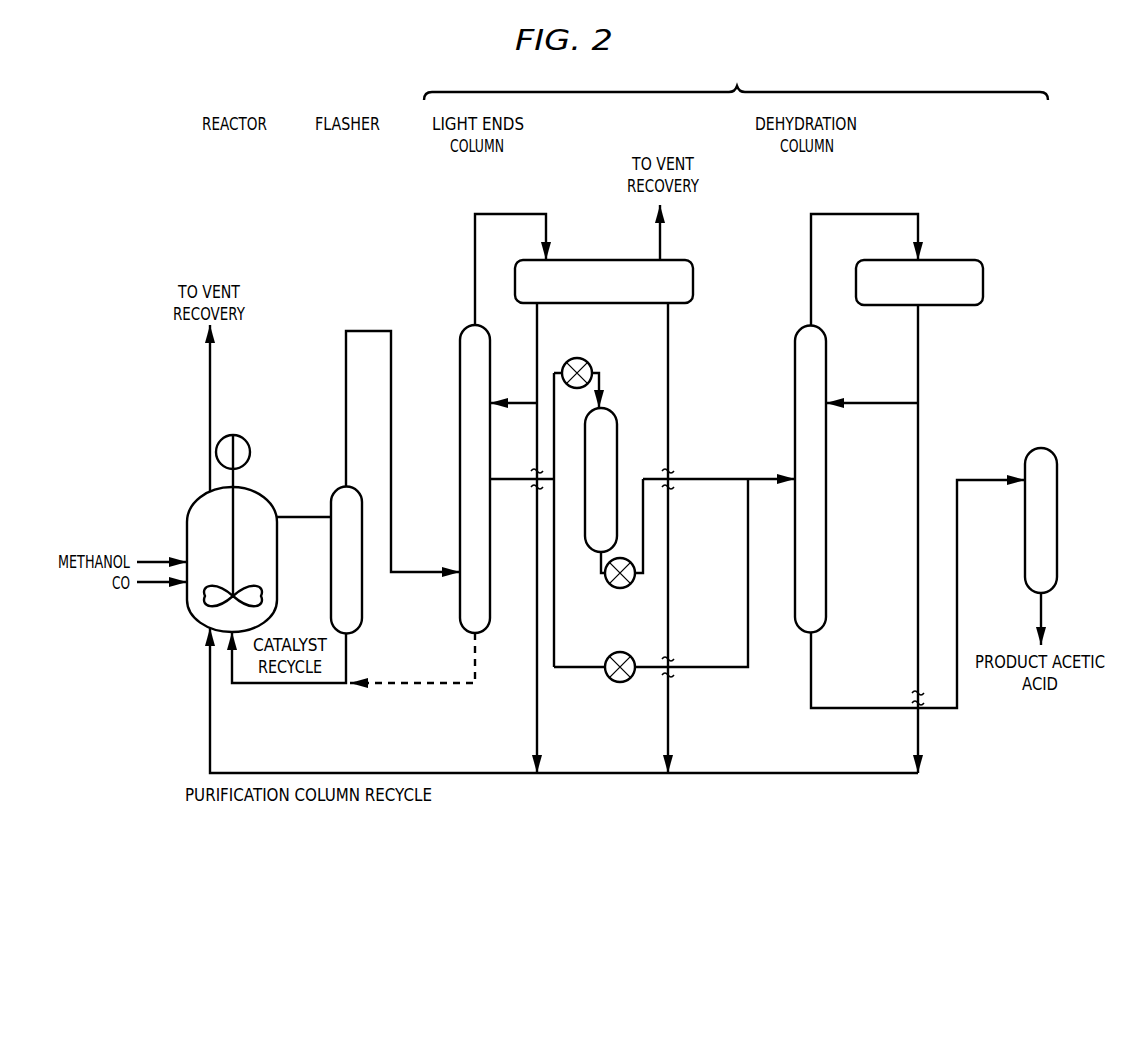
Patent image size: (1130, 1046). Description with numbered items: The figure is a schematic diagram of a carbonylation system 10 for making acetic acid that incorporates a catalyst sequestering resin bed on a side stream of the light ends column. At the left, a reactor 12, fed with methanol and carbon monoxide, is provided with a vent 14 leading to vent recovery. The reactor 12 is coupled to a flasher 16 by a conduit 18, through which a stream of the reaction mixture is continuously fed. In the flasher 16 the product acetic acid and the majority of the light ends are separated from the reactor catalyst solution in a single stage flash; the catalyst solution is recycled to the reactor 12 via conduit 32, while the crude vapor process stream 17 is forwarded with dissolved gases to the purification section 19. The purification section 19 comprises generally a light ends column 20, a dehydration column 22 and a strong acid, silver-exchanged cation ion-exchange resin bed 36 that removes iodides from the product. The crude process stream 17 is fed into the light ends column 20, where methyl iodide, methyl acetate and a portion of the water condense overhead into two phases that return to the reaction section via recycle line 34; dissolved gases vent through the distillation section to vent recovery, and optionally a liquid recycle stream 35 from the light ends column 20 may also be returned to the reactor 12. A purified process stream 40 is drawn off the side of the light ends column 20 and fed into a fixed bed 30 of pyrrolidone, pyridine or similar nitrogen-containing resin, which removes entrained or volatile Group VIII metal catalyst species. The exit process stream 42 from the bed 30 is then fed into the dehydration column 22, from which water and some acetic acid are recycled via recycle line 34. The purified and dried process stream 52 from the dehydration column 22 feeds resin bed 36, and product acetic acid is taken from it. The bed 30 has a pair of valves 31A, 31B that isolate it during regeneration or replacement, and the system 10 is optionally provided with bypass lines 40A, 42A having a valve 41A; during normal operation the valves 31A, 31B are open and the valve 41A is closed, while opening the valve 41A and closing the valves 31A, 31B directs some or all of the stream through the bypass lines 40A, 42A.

The carbonylation system 10 is at (218, 243).
The reactor 12 is at (186, 542).
The vent 14 is at (212, 410).
The flasher 16 is at (363, 600).
The crude process stream 17 is at (366, 331).
The conduit 18 is at (298, 516).
The purification section 19 is at (736, 81).
The light ends column 20 is at (460, 360).
The dehydration column 22 is at (820, 446).
The fixed bed 30 is at (622, 408).
The valve 31A is at (571, 360).
The valve 31B is at (624, 590).
The conduit 32 is at (255, 686).
The recycle line 34 is at (460, 776).
The liquid recycle stream 35 is at (428, 680).
The silver-exchanged cation ion-exchange resin bed 36 is at (1058, 490).
The purified process stream 40 is at (500, 478).
The bypass line 40A is at (556, 590).
The valve 41A is at (622, 684).
The exit process stream 42 is at (712, 482).
The bypass line 42A is at (732, 670).
The purified and dried process stream 52 is at (978, 478).